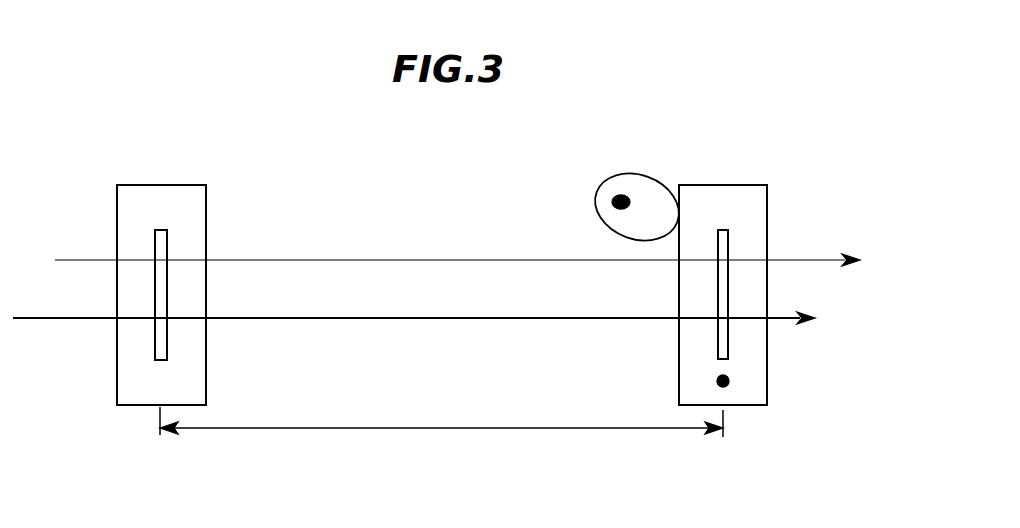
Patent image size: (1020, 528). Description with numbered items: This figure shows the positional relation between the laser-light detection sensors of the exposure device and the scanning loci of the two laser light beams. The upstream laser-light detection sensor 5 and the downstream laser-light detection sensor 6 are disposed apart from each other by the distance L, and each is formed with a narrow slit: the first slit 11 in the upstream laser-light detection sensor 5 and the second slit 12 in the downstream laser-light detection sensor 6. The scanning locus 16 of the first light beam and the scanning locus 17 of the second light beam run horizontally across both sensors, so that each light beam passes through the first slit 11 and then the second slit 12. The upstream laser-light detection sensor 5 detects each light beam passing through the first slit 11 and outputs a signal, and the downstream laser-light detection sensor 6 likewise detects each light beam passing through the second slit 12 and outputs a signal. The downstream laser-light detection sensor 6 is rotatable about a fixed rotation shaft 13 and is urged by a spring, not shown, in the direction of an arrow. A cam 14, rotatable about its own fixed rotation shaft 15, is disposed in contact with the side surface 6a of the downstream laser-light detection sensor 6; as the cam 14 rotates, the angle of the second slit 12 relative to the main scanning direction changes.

The upstream laser-light detection sensor 5 is at (182, 184).
The downstream laser-light detection sensor 6 is at (745, 184).
The side surface 6a is at (678, 374).
The first slit 11 is at (160, 350).
The second slit 12 is at (724, 352).
The fixed rotation shaft 13 is at (727, 387).
The cam 14 is at (645, 189).
The fixed rotation shaft 15 is at (619, 201).
The scanning locus of the first light beam 16 is at (340, 258).
The scanning locus of the second light beam 17 is at (436, 316).
The distance L is at (441, 417).